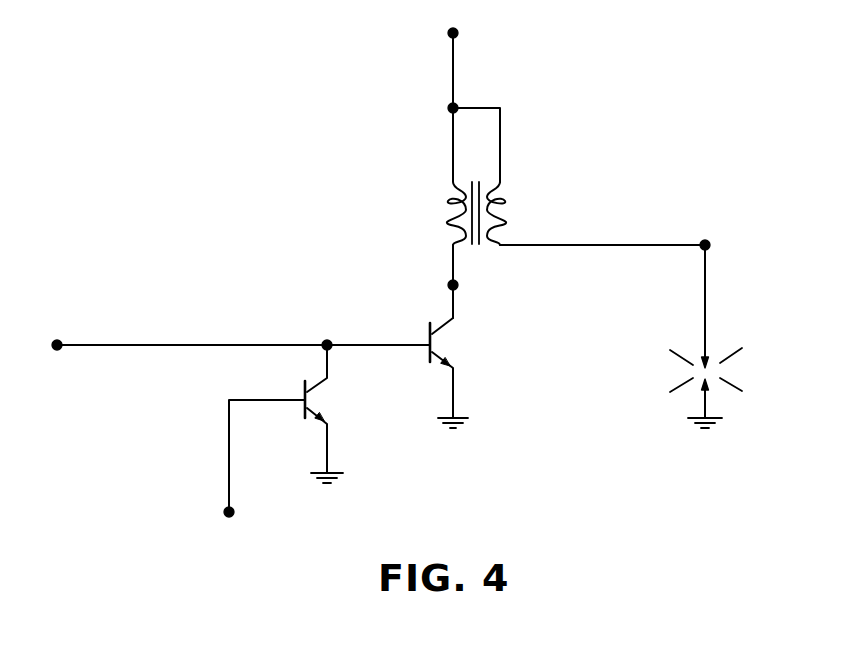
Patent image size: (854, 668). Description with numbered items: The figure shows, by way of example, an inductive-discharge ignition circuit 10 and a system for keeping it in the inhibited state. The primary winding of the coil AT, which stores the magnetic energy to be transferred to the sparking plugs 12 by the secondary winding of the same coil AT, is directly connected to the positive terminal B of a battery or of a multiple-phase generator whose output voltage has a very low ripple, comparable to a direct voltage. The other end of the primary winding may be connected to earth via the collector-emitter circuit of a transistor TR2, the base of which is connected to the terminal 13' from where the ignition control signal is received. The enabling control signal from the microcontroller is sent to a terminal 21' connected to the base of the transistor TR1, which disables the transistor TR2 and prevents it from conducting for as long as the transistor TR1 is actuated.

The ignition circuit 10 is at (287, 228).
The terminal 13' is at (66, 348).
The terminal 21' is at (233, 507).
The sparking plugs 12 is at (723, 336).
The transistor TR1 is at (341, 414).
The transistor TR2 is at (468, 373).
The coil AT is at (493, 176).
The positive terminal B is at (451, 34).